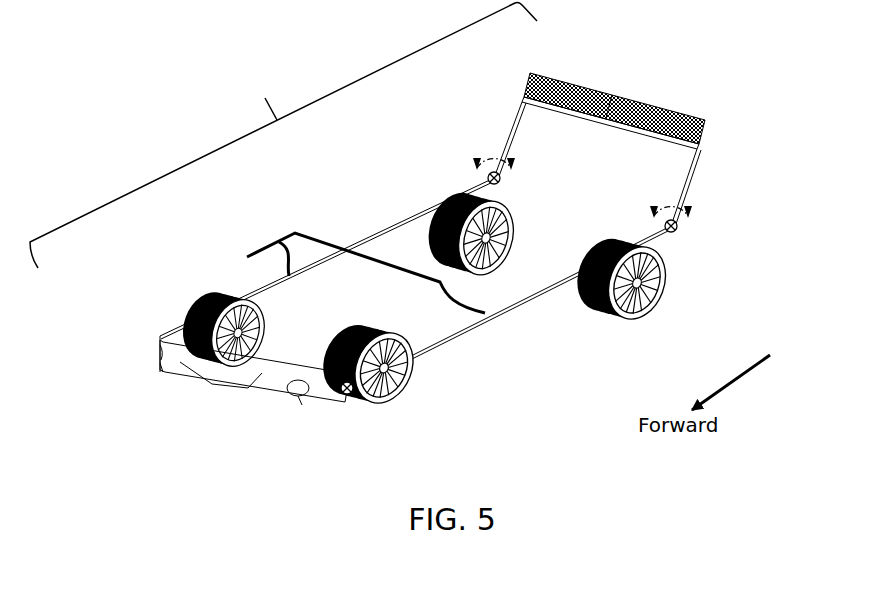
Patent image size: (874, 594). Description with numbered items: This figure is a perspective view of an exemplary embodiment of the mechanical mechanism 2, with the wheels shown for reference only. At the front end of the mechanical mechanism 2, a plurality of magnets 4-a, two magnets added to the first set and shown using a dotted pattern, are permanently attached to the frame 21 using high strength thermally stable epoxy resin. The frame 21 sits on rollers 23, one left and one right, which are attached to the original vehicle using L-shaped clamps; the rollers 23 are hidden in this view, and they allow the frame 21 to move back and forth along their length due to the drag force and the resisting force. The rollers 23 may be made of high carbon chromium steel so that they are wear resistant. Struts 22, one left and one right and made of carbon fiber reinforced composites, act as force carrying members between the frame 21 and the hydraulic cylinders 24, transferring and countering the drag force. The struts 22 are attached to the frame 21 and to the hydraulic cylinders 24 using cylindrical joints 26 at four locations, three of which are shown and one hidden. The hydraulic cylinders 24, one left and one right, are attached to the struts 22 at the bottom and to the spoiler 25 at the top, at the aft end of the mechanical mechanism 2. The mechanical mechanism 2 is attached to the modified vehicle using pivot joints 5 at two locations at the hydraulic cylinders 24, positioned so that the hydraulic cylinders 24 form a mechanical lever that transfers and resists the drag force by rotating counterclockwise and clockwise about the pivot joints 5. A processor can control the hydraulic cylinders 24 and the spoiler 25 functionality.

The mechanical mechanism 2 is at (260, 90).
The plurality of magnets 4-a is at (287, 390).
The pivot joints 5 is at (523, 162).
The frame 21 is at (270, 382).
The struts 22 is at (416, 284).
The rollers 23 is at (160, 365).
The hydraulic cylinders 24 is at (507, 124).
The spoiler 25 is at (610, 93).
The cylindrical joints 26 is at (488, 179).